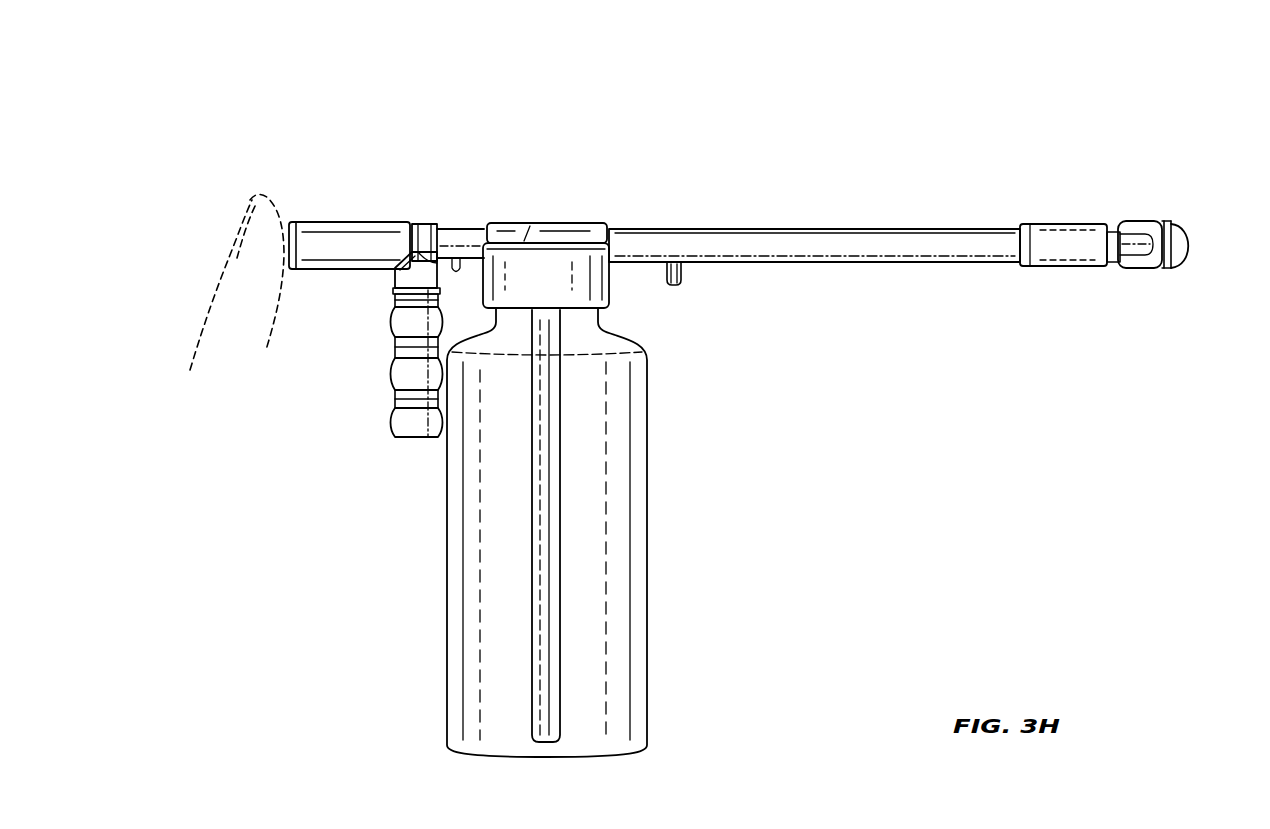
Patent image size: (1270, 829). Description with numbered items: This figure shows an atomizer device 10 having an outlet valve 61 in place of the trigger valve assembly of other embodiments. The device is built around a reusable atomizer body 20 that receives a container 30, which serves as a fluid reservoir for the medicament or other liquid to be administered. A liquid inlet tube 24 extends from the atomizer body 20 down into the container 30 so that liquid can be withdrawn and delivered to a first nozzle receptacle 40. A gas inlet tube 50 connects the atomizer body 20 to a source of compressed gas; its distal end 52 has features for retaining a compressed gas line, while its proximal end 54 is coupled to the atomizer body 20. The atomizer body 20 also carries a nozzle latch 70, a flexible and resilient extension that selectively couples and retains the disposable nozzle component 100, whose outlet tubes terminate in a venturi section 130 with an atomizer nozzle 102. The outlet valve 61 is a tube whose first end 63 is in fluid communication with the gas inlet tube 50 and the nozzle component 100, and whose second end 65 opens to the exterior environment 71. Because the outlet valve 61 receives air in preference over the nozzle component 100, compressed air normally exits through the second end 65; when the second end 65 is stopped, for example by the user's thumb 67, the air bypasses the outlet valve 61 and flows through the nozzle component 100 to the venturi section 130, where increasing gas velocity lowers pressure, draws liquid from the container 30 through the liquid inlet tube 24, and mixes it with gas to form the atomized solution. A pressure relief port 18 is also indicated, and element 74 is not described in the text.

The atomizer device 10 is at (931, 330).
The pressure relief port 18 is at (466, 258).
The atomizer body 20 is at (560, 226).
The liquid inlet tube 24 is at (548, 421).
The container 30 is at (647, 524).
The first nozzle receptacle 40 is at (612, 223).
The gas inlet tube 50 is at (396, 372).
The distal end 52 is at (404, 438).
The proximal end 54 is at (396, 298).
The outlet valve 61 is at (350, 222).
The first end 63 is at (401, 224).
The second end 65 is at (292, 222).
The user's thumb 67 is at (222, 252).
The nozzle latch 70 is at (683, 270).
The exterior environment 71 is at (277, 100).
The tab base 74 is at (674, 286).
The nozzle component 100 is at (820, 212).
The atomizer nozzle 102 is at (1186, 230).
The venturi section 130 is at (1150, 270).